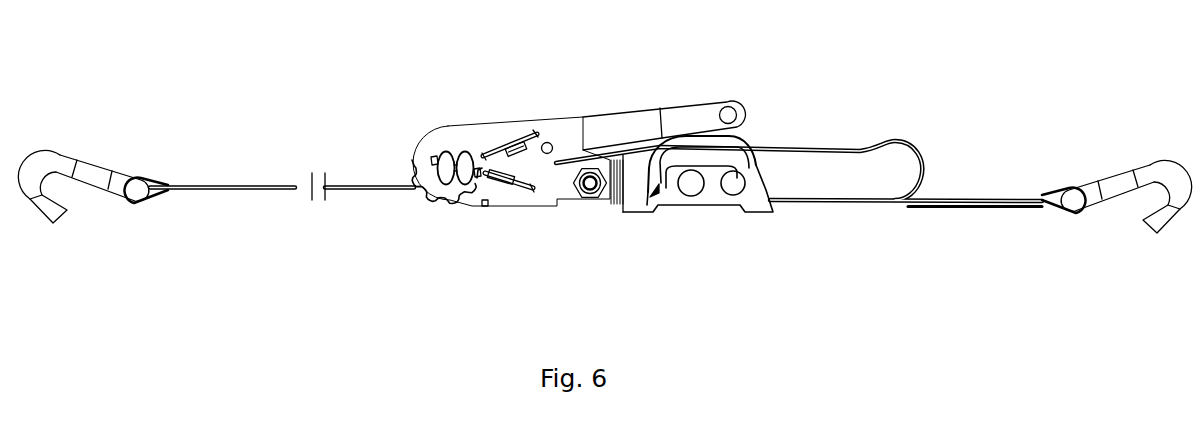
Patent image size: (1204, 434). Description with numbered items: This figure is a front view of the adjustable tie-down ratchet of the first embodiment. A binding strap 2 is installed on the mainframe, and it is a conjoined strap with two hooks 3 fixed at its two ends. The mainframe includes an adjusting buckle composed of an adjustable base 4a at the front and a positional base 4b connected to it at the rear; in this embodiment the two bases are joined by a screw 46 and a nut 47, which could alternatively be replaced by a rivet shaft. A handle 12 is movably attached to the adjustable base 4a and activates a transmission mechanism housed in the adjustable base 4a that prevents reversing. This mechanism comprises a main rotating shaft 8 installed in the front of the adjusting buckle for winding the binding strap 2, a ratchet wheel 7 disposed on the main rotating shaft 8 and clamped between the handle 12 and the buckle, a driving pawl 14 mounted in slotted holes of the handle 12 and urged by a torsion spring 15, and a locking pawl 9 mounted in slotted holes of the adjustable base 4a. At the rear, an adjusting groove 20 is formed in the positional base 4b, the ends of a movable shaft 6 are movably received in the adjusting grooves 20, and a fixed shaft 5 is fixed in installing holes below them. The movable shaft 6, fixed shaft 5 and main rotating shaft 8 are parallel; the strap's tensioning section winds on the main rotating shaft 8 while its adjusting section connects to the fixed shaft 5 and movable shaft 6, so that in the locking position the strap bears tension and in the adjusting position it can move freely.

The binding strap 2 is at (222, 193).
The hook 3 is at (97, 173).
The adjustable base 4a is at (522, 203).
The positional base 4b is at (763, 195).
The fixed shaft 5 is at (690, 190).
The movable shaft 6 is at (733, 190).
The ratchet wheel 7 is at (441, 204).
The main rotating shaft 8 is at (437, 155).
The locking pawl 9 is at (490, 203).
The handle 12 is at (620, 132).
The driving pawl 14 is at (500, 142).
The torsion spring 15 is at (515, 147).
The adjusting groove 20 is at (656, 192).
The screw 46 is at (597, 190).
The nut 47 is at (576, 200).